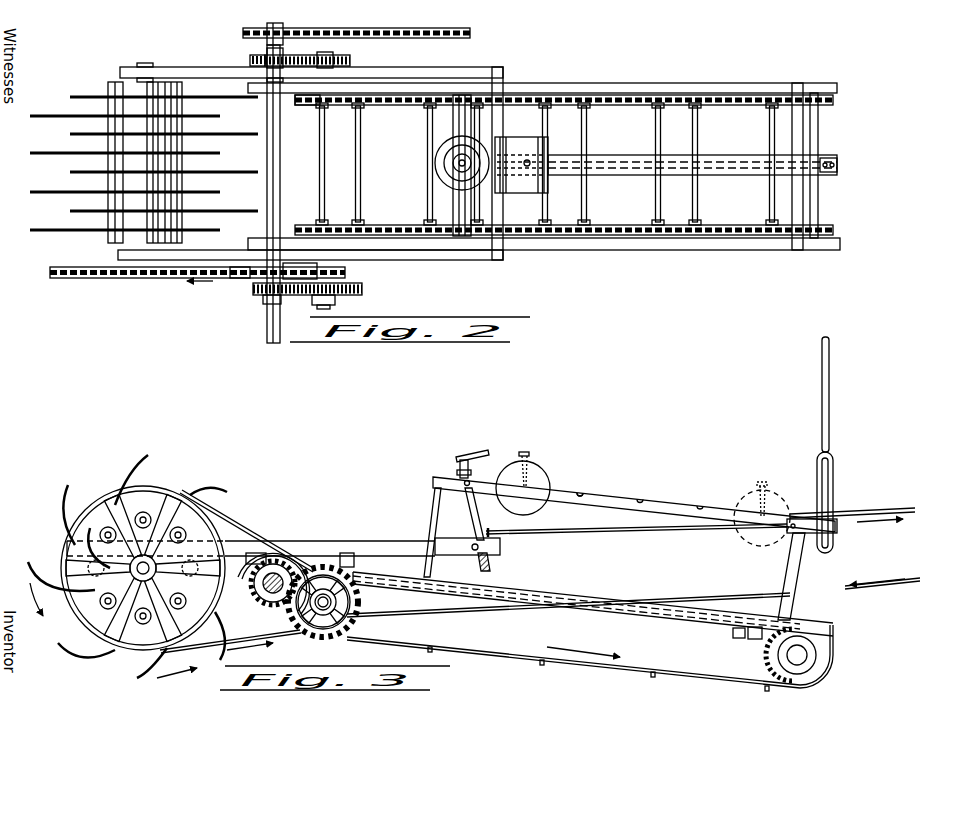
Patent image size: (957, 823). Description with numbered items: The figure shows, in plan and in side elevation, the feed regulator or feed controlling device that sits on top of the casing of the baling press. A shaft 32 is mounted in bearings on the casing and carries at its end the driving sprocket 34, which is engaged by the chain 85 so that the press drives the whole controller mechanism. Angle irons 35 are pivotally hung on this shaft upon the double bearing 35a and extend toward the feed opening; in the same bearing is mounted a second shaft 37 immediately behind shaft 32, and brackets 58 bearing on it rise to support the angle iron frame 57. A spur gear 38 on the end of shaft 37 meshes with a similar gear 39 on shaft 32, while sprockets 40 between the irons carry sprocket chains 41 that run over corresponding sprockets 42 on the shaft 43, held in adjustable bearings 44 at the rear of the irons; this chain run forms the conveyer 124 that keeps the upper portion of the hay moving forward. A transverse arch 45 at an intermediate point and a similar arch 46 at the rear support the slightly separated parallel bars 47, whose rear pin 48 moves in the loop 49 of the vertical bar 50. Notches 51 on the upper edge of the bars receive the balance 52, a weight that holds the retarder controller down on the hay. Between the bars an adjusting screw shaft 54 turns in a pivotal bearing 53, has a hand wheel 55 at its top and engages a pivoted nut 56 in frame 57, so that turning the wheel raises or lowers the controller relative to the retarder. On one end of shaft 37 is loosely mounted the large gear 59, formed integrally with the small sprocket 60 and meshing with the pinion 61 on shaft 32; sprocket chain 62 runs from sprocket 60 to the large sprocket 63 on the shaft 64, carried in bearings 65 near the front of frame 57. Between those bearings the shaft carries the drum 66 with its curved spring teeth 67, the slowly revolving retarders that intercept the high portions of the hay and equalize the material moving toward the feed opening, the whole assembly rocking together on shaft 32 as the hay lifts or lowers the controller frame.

In FIG. 2, the shaft 32 is at (265, 320).
In FIG. 3, the shaft 32 is at (277, 573).
In FIG. 2, the driving sprocket 34 is at (285, 32).
In FIG. 2, the angle irons 35 is at (522, 88).
In FIG. 3, the angle irons 35 is at (523, 590).
In FIG. 3, the double bearing 35a is at (297, 570).
In FIG. 2, the shaft 37 is at (330, 305).
In FIG. 3, the shaft 37 is at (323, 593).
In FIG. 2, the spur gear 38 is at (350, 62).
In FIG. 2, the spur gear 39 is at (257, 57).
In FIG. 2, the sprockets 40 is at (307, 105).
In FIG. 2, the sprocket chains 41 is at (638, 102).
In FIG. 3, the sprocket chains 41 is at (500, 655).
In FIG. 3, the sprockets 42 is at (760, 655).
In FIG. 3, the shaft 43 is at (798, 660).
In FIG. 3, the adjustable bearings 44 is at (823, 640).
In FIG. 2, the arch 45 is at (450, 125).
In FIG. 3, the arch 45 is at (435, 505).
In FIG. 2, the arch 46 is at (803, 203).
In FIG. 3, the arch 46 is at (800, 568).
In FIG. 2, the parallel bars 47 is at (705, 160).
In FIG. 3, the parallel bars 47 is at (668, 507).
In FIG. 3, the pin 48 is at (830, 523).
In FIG. 3, the loop 49 is at (833, 467).
In FIG. 3, the vertical bar 50 is at (829, 372).
In FIG. 3, the notches 51 is at (640, 499).
In FIG. 2, the balance 52 is at (508, 142).
In FIG. 3, the balance 52 is at (540, 470).
In FIG. 3, the pivotal bearing 53 is at (470, 480).
In FIG. 3, the adjusting screw shaft 54 is at (477, 520).
In FIG. 2, the hand wheel 55 is at (440, 183).
In FIG. 3, the hand wheel 55 is at (462, 457).
In FIG. 3, the pivoted nut 56 is at (478, 558).
In FIG. 2, the frame 57 is at (440, 258).
In FIG. 3, the frame 57 is at (500, 545).
In FIG. 3, the brackets 58 is at (345, 553).
In FIG. 2, the large gear 59 is at (362, 288).
In FIG. 3, the large gear 59 is at (360, 602).
In FIG. 2, the small sprocket 60 is at (318, 272).
In FIG. 3, the small sprocket 60 is at (303, 627).
In FIG. 2, the pinion 61 is at (268, 300).
In FIG. 3, the pinion 61 is at (263, 565).
In FIG. 2, the sprocket chain 62 is at (237, 279).
In FIG. 3, the large sprocket 63 is at (105, 553).
In FIG. 2, the shaft 64 is at (148, 280).
In FIG. 3, the bearings 65 is at (117, 555).
In FIG. 2, the drum 66 is at (120, 92).
In FIG. 3, the drum 66 is at (127, 632).
In FIG. 3, the curved spring teeth 67 is at (132, 477).
In FIG. 2, the chain 85 is at (433, 30).
In FIG. 3, the chain 85 is at (875, 512).
In FIG. 2, the conveyer 124 is at (726, 202).